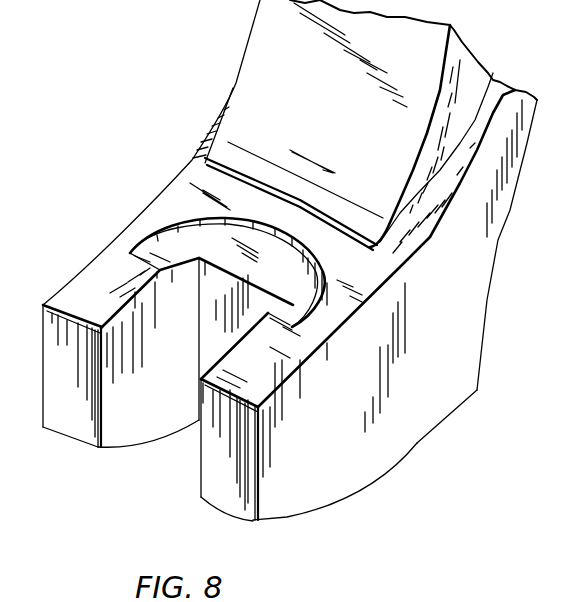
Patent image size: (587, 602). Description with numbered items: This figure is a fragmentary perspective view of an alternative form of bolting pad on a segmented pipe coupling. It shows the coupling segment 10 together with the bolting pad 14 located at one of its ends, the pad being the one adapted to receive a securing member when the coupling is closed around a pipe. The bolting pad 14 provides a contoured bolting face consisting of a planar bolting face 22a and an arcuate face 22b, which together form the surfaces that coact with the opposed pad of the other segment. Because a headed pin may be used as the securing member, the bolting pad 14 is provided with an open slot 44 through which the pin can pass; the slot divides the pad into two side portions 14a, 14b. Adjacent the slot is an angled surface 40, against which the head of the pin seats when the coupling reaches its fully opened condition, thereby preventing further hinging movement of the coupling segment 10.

The coupling segment 10 is at (260, 62).
The bolting pad 14 is at (70, 287).
The first leg of base block 14a is at (67, 423).
The second leg of base block 14b is at (233, 497).
The planar bolting face 22a is at (417, 443).
The arcuate face 22b is at (267, 522).
The angled surface 40 is at (185, 243).
The open slot 44 is at (180, 452).